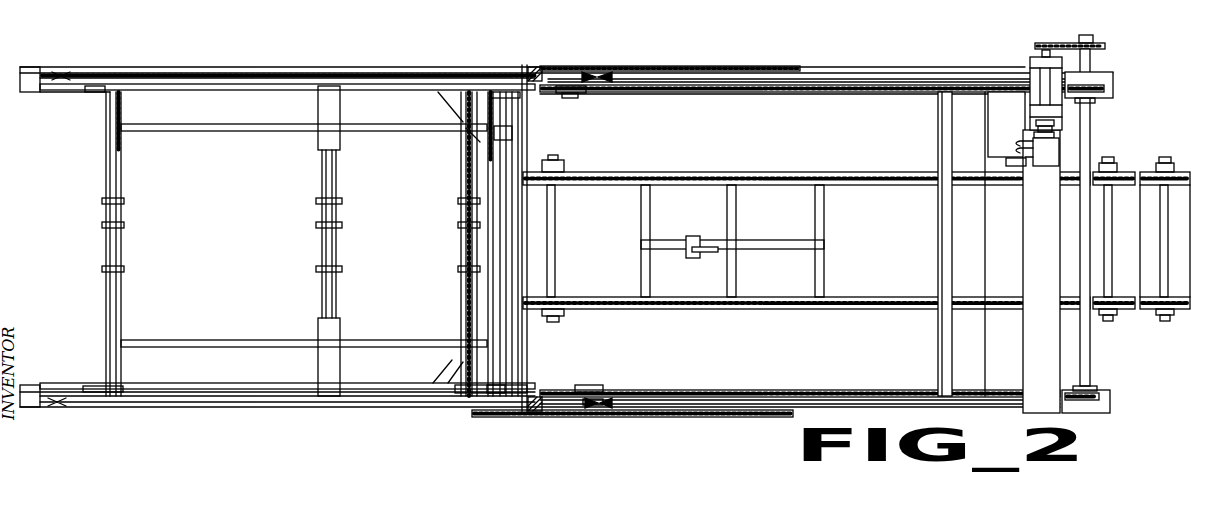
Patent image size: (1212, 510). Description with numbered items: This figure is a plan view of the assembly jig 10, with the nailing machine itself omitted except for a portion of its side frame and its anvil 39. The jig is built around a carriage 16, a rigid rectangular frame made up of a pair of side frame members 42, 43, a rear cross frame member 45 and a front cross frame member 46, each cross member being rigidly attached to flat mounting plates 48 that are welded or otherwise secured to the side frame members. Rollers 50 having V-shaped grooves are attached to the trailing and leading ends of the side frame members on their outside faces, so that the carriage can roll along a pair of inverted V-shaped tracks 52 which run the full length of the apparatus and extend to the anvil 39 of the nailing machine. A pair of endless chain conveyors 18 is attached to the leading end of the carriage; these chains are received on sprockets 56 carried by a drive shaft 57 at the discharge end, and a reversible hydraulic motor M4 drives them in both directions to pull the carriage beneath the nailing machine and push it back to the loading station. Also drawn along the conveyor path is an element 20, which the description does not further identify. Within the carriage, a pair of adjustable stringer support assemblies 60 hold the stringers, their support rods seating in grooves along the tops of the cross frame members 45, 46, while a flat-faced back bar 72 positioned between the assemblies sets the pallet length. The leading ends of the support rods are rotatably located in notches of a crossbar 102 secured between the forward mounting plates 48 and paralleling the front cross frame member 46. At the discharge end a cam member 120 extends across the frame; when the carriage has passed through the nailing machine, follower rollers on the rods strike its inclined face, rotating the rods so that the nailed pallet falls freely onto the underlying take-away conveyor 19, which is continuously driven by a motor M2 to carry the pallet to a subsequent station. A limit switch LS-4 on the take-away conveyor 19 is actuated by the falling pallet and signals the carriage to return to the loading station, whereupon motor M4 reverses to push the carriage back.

The assembly jig 10 is at (92, 47).
The carriage 16 is at (104, 147).
The endless chain conveyors 18 is at (820, 93).
The take-away conveyor 19 is at (716, 172).
The rack bar 20 is at (672, 66).
The anvil 39 is at (508, 337).
The side frame member 42 is at (190, 387).
The side frame member 43 is at (216, 84).
The rear cross frame member 45 is at (105, 180).
The front cross frame member 46 is at (461, 165).
The flat mounting plates 48 is at (100, 92).
The rollers 50 is at (62, 72).
The inverted V-shaped tracks 52 is at (146, 73).
The sprockets 56 is at (1088, 88).
The drive shaft 57 is at (1090, 130).
The adjustable stringer support assemblies 60 is at (225, 124).
The flat-faced back bar 72 is at (320, 183).
The crossbar 102 is at (490, 250).
The cam member 120 is at (952, 142).
The motor M2 is at (1005, 102).
The hydraulic motor M4 is at (1046, 166).
The limit switch LS-4 is at (700, 258).